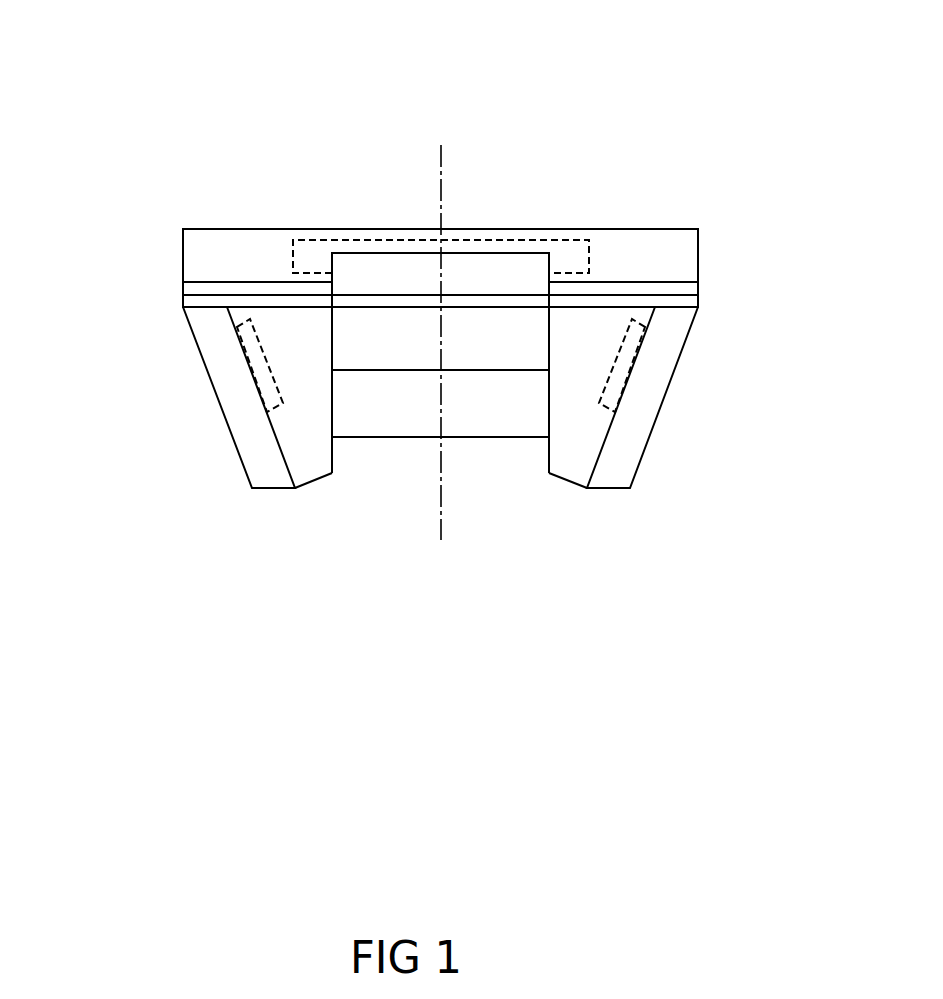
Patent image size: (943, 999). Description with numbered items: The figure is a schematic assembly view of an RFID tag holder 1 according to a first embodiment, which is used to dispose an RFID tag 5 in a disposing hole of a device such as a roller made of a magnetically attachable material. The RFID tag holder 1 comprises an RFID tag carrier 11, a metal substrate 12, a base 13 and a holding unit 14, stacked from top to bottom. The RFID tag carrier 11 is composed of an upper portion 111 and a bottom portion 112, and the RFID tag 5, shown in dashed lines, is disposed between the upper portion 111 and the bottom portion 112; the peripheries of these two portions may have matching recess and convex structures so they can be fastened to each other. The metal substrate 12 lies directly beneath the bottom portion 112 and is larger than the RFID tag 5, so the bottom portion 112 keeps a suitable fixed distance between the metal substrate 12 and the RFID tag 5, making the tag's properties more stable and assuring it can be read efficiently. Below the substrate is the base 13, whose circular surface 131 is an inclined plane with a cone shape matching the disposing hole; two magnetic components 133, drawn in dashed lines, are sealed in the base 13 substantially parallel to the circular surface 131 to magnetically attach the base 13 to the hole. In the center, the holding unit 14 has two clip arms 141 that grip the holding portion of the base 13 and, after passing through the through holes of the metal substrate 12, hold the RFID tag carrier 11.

The RFID tag holder 1 is at (168, 115).
The RFID tag 5 is at (549, 247).
The RFID tag carrier 11 is at (75, 240).
The upper portion 111 is at (200, 252).
The bottom portion 112 is at (200, 290).
The metal substrate 12 is at (685, 299).
The base 13 is at (188, 392).
The circular surface 131 is at (243, 433).
The magnetic component 133 is at (260, 355).
The holding unit 14 is at (502, 422).
The clip arm 141 is at (397, 350).